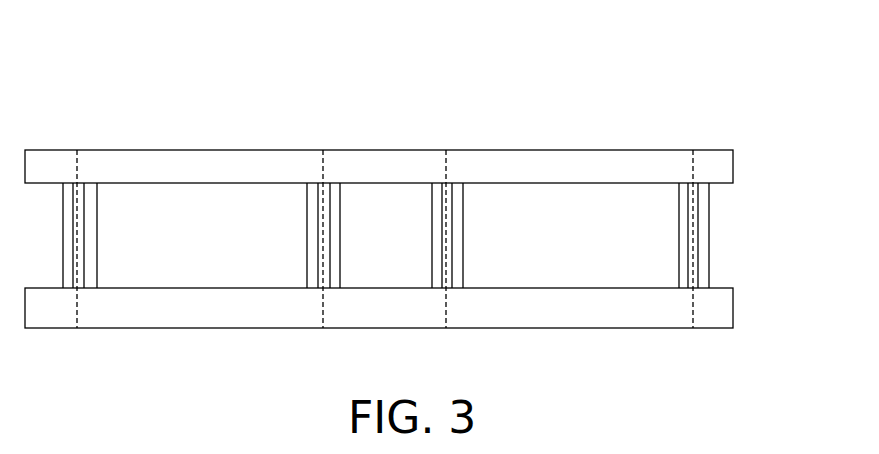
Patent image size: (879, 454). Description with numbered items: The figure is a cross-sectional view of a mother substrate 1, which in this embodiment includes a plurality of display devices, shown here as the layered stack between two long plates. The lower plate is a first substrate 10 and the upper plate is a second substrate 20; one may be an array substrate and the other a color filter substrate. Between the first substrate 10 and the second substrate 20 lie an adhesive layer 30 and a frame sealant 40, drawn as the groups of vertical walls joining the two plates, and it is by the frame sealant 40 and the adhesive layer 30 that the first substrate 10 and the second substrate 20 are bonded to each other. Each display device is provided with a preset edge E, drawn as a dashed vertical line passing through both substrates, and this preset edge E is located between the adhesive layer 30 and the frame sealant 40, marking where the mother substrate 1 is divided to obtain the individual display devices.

The mother substrate 1 is at (164, 78).
The first substrate 10 is at (707, 300).
The second substrate 20 is at (733, 168).
The adhesive layer 30 is at (431, 192).
The frame sealant 40 is at (460, 192).
The preset edge E is at (447, 307).